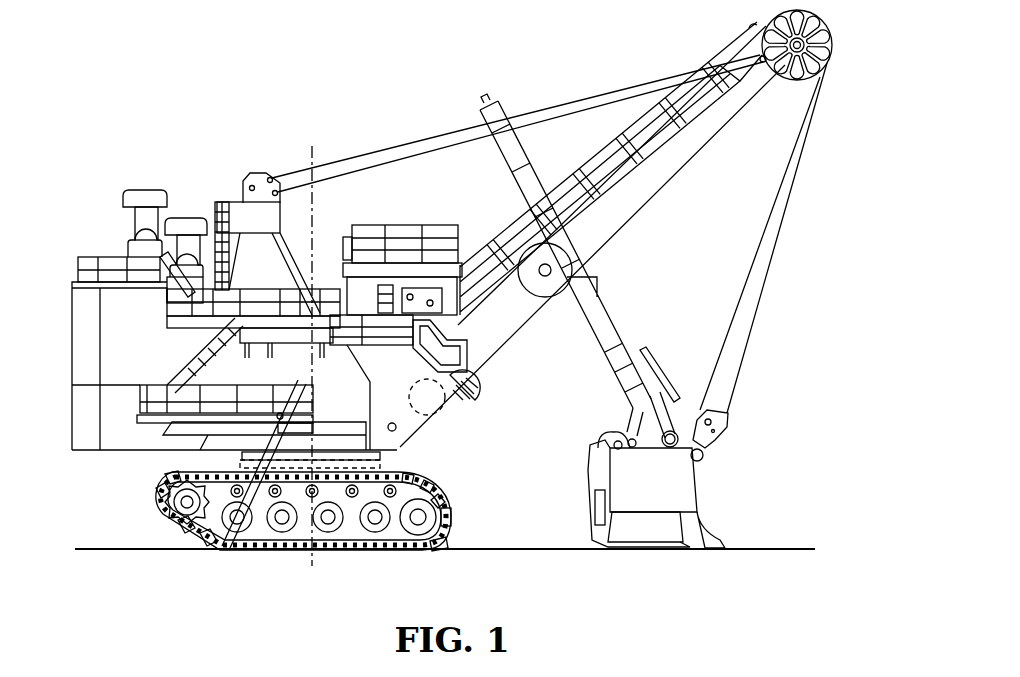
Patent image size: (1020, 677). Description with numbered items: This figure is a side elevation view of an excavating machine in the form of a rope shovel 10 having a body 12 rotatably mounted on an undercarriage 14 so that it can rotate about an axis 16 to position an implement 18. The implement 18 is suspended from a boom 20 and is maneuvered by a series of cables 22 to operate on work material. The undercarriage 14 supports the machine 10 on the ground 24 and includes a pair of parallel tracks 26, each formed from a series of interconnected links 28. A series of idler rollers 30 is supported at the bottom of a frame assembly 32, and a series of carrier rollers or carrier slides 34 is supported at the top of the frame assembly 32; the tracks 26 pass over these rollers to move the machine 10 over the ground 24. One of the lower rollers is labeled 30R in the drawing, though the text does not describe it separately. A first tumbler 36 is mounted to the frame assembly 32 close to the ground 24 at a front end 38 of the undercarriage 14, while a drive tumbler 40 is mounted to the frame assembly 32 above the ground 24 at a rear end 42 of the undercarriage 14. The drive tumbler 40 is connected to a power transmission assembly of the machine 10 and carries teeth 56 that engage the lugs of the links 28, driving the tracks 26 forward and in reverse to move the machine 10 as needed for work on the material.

The rope shovel 10 is at (191, 107).
The body 12 is at (105, 340).
The undercarriage 14 is at (448, 489).
The axis 16 is at (315, 152).
The implement 18 is at (680, 490).
The boom 20 is at (641, 186).
The cables 22 is at (765, 265).
The ground 24 is at (530, 551).
The tracks 26 is at (452, 513).
The links 28 is at (420, 476).
The idler rollers 30 is at (240, 520).
The rear track shoe / roller 30R is at (227, 547).
The frame assembly 32 is at (282, 519).
The carrier rollers 34 is at (352, 497).
The first tumbler 36 is at (417, 519).
The front end 38 is at (447, 541).
The drive tumbler 40 is at (168, 505).
The rear end 42 is at (172, 523).
The teeth 56 is at (176, 489).